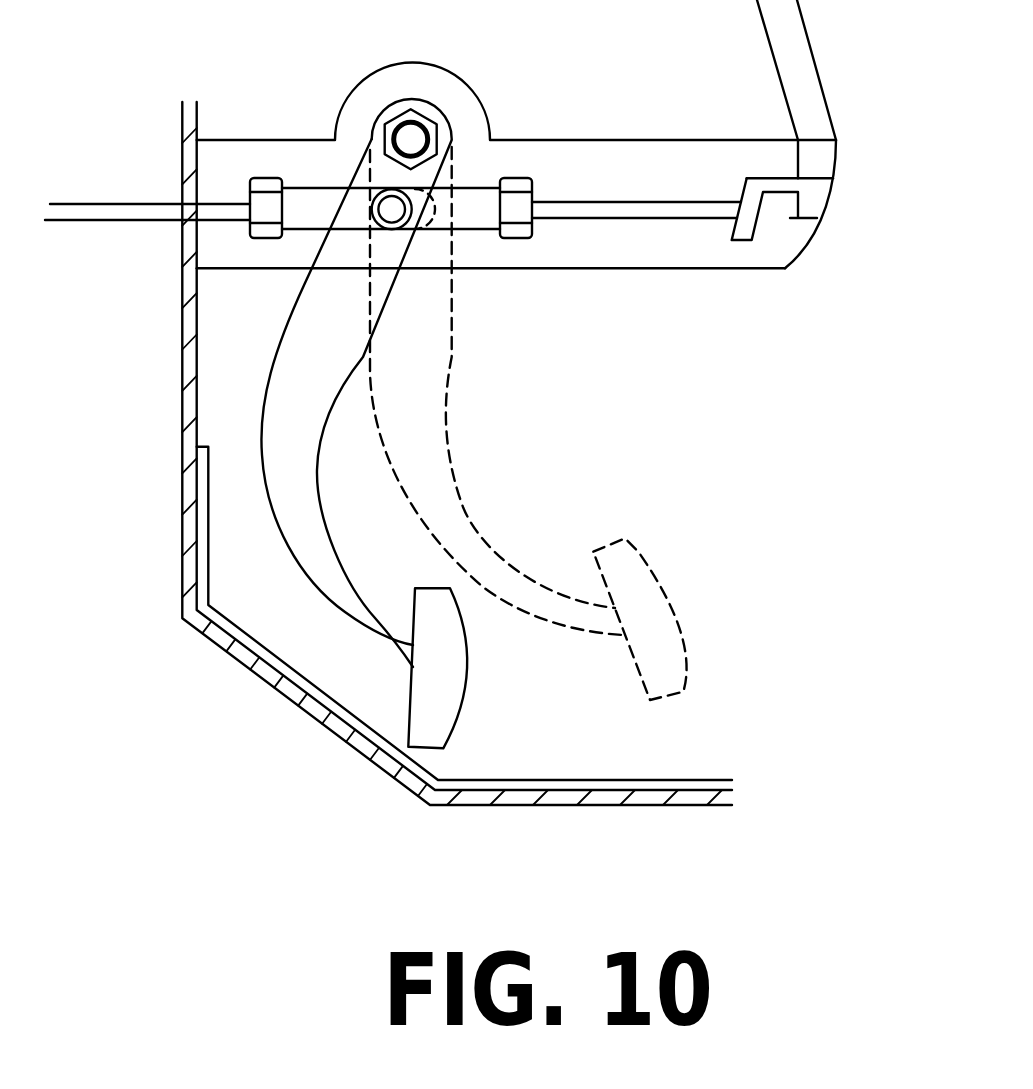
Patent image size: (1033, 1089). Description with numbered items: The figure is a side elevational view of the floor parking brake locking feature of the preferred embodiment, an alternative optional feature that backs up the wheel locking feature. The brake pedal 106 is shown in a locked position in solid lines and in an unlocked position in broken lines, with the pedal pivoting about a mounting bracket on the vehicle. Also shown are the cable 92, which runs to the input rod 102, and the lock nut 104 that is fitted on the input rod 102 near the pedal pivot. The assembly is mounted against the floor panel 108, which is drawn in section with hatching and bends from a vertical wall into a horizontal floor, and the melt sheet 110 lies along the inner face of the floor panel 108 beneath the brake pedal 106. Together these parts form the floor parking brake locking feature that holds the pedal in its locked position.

The cable 92 is at (130, 203).
The input rod 102 is at (378, 189).
The lock nut 104 is at (267, 240).
The brake pedal 106 is at (466, 667).
The floor panel 108 is at (275, 685).
The melt sheet 110 is at (617, 780).